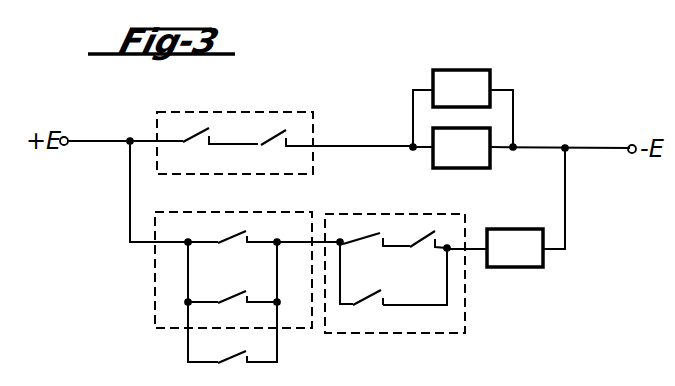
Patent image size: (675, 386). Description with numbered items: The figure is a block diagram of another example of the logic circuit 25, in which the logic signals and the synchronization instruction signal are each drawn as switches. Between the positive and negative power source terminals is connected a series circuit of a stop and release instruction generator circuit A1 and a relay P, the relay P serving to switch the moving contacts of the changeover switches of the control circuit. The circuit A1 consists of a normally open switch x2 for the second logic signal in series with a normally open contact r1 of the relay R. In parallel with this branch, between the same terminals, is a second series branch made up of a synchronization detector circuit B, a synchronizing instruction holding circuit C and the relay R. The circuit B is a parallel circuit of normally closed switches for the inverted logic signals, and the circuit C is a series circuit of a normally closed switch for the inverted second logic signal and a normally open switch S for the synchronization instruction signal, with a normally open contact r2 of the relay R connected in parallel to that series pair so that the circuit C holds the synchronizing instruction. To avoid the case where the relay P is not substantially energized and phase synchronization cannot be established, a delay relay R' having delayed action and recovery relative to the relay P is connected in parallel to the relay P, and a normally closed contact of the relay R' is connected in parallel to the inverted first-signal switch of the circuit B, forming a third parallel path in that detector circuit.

The logic circuit 25 is at (370, 120).
The stop and release instruction generator circuit A1 is at (248, 99).
The synchronization detector circuit B is at (157, 277).
The synchronizing instruction holding circuit C is at (405, 212).
The delay relay R' is at (461, 88).
The relay P is at (461, 148).
The relay R is at (515, 248).
The normally open switch x2 is at (213, 132).
The normally open contact of relay R r1 is at (335, 131).
The normally open switch for synchronization instruction signal S is at (427, 232).
The normally open contact of relay R r2 is at (368, 290).